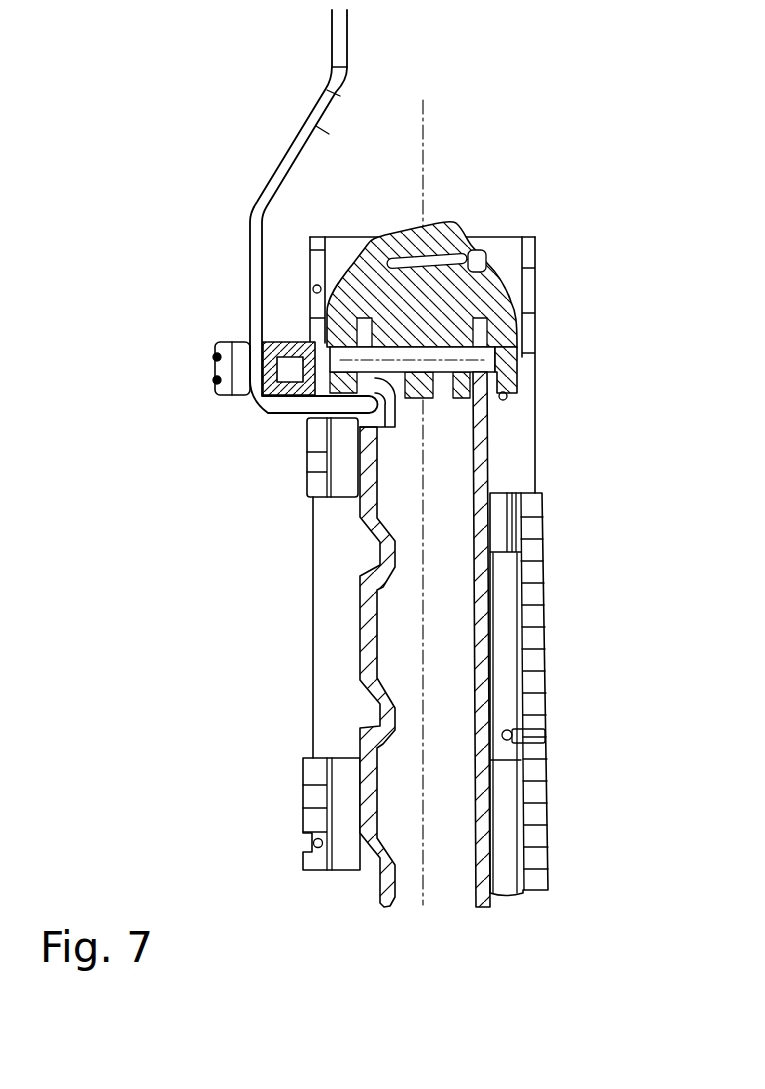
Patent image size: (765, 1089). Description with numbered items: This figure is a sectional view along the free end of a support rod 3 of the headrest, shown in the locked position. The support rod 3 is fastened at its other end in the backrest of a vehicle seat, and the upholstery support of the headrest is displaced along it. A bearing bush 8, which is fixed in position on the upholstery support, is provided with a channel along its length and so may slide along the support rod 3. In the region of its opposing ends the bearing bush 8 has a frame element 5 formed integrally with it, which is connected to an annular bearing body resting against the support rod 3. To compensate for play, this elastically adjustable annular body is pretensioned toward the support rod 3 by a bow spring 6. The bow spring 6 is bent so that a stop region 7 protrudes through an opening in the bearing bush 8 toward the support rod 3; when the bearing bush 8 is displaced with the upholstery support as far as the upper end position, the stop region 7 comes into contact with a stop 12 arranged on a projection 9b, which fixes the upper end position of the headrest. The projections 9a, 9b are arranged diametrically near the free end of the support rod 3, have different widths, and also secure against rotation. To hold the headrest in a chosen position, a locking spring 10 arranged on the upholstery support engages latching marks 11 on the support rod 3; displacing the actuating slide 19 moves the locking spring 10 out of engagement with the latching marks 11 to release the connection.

The support rod 3 is at (453, 780).
The frame element 5 is at (317, 462).
The bow spring 6 is at (310, 289).
The stop region 7 is at (523, 438).
The bearing bush 8 is at (535, 640).
The projection 9a is at (335, 238).
The projection 9b is at (500, 338).
The locking spring 10 is at (330, 144).
The latching marks 11 is at (367, 573).
The stop 12 is at (507, 403).
The actuating slide 19 is at (248, 393).